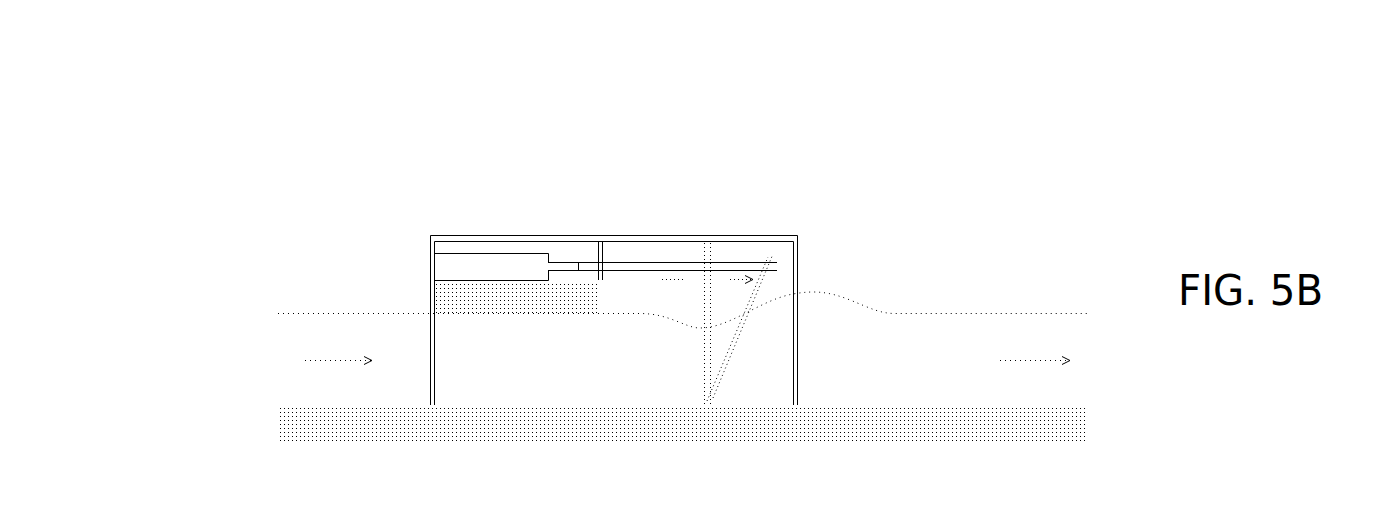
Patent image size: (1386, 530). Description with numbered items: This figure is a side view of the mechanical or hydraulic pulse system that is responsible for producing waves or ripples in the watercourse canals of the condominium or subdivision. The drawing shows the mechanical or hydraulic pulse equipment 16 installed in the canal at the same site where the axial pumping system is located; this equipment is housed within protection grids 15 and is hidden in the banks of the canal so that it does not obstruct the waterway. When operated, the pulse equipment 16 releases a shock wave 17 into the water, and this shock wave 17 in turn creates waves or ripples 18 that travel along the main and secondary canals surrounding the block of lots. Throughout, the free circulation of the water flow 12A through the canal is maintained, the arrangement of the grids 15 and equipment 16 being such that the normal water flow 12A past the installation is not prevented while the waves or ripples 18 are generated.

The water flow 12A is at (342, 347).
The protection grids 15 is at (430, 232).
The mechanical or hydraulic pulse equipment 16 is at (588, 198).
The shock wave 17 is at (718, 262).
The waves or ripples 18 is at (848, 298).